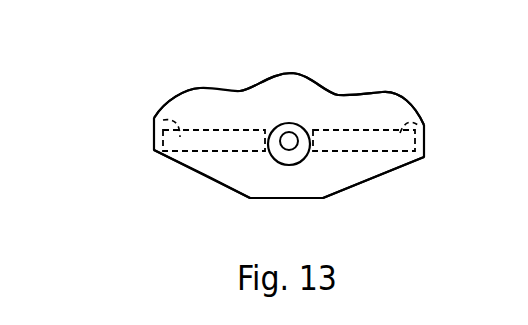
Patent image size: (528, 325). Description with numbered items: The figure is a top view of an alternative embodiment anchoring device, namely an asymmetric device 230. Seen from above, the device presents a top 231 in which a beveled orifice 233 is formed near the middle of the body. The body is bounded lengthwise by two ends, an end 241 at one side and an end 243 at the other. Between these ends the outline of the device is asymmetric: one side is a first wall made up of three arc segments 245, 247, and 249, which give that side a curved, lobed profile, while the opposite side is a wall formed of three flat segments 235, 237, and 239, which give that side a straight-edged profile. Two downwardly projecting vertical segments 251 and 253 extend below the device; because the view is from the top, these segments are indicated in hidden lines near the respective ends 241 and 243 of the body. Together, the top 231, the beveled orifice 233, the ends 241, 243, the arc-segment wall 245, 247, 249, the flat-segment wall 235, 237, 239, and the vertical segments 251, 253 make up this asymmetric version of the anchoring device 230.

The asymmetric anchoring device 230 is at (153, 167).
The top 231 is at (237, 189).
The beveled orifice 233 is at (291, 165).
The flat segment 235 is at (385, 174).
The flat segment 237 is at (324, 199).
The flat segment 239 is at (207, 178).
The end 241 is at (153, 141).
The end 243 is at (425, 145).
The arc segment 245 is at (202, 88).
The arc segment 247 is at (299, 73).
The arc segment 249 is at (385, 92).
The downwardly projecting vertical segment 251 is at (147, 123).
The downwardly projecting vertical segment 253 is at (428, 128).